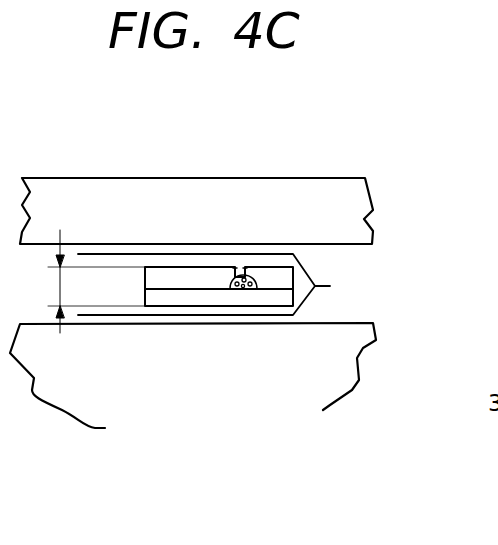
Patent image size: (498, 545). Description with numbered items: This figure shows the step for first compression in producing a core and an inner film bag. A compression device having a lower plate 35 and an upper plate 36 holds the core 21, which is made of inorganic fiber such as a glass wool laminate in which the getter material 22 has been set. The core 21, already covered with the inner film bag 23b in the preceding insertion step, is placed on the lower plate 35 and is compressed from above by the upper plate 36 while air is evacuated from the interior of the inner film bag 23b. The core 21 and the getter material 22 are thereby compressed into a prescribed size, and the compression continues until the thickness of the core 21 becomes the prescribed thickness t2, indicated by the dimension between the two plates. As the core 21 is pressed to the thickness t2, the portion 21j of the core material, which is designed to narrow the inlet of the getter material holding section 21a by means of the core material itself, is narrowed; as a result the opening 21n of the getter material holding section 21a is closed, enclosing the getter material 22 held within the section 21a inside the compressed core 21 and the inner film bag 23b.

The upper plate 36 is at (75, 177).
The lower plate 35 is at (65, 413).
The inner film bag 23b is at (316, 275).
The core 21 is at (173, 297).
The getter material 22 is at (225, 288).
The getter material holding section 21a is at (238, 290).
The opening of the getter material holding section 21n is at (244, 268).
The portion designed to narrow the inlet 21j is at (237, 268).
The prescribed thickness t2 is at (88, 281).